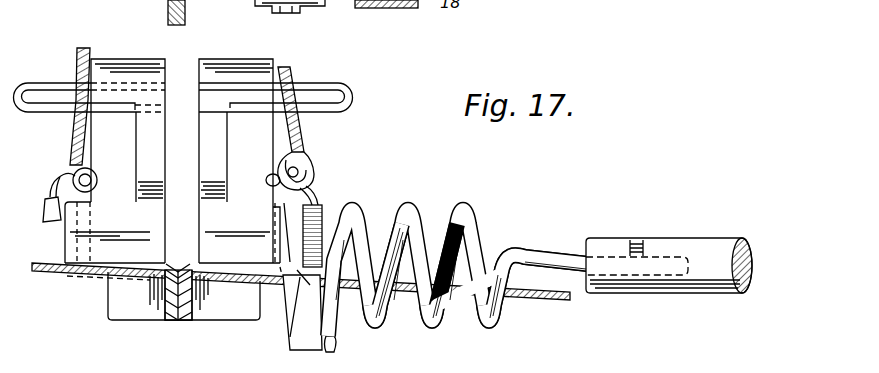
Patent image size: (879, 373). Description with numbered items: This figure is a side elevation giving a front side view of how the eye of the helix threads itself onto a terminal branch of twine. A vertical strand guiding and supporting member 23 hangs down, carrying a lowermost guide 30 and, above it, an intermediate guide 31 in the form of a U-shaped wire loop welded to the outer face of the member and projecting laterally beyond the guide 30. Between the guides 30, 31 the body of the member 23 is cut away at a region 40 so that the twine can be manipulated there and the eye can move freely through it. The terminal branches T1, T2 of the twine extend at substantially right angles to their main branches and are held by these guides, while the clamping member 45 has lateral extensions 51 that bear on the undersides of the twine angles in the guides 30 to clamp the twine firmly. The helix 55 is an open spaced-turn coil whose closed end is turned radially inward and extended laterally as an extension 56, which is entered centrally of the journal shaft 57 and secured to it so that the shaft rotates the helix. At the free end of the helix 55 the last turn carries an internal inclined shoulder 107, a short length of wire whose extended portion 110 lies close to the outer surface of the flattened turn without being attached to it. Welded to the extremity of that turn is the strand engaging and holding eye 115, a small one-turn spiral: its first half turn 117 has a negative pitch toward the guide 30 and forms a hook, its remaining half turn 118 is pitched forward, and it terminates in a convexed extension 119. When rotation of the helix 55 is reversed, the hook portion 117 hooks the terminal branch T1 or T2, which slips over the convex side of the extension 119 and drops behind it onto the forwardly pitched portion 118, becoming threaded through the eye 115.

The terminal branch T2 is at (82, 48).
The terminal branch T1 is at (290, 72).
The strand guiding and supporting member 23 is at (205, 70).
The intermediate guide 31 is at (40, 85).
The cutaway region 40 is at (240, 145).
The lowermost guide 30 is at (128, 228).
The lateral extension 51 is at (112, 303).
The clamping member 45 is at (173, 323).
The internal inclined shoulder 107 is at (307, 290).
The extended portion of shoulder 110 is at (330, 348).
The strand engaging and holding eye 115 is at (266, 182).
The hook portion of the eye 117 is at (316, 194).
The forwardly pitched portion of the eye 118 is at (283, 175).
The convexed extension 119 is at (300, 160).
The helix 55 is at (462, 208).
The lateral extension of helix 56 is at (578, 255).
The journal shaft 57 is at (618, 245).